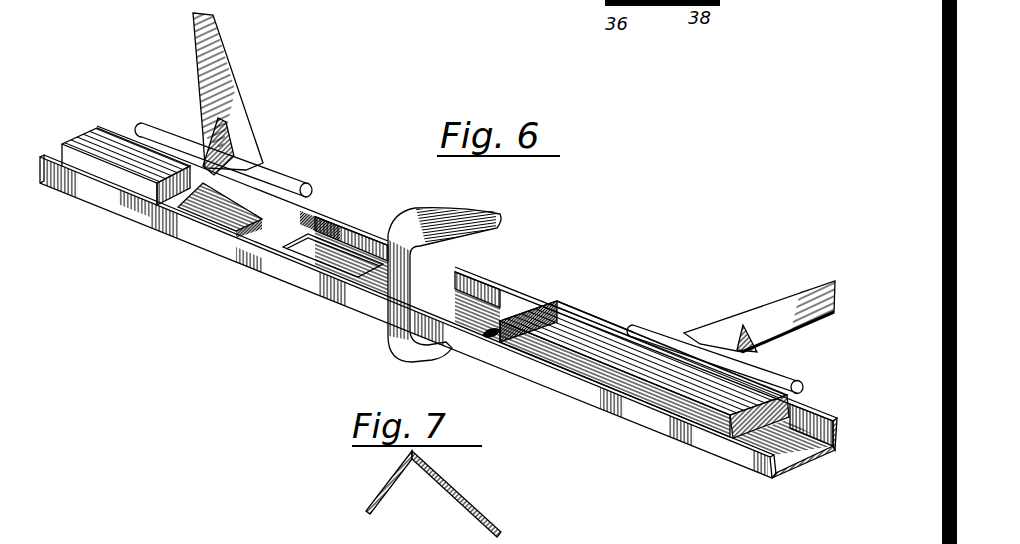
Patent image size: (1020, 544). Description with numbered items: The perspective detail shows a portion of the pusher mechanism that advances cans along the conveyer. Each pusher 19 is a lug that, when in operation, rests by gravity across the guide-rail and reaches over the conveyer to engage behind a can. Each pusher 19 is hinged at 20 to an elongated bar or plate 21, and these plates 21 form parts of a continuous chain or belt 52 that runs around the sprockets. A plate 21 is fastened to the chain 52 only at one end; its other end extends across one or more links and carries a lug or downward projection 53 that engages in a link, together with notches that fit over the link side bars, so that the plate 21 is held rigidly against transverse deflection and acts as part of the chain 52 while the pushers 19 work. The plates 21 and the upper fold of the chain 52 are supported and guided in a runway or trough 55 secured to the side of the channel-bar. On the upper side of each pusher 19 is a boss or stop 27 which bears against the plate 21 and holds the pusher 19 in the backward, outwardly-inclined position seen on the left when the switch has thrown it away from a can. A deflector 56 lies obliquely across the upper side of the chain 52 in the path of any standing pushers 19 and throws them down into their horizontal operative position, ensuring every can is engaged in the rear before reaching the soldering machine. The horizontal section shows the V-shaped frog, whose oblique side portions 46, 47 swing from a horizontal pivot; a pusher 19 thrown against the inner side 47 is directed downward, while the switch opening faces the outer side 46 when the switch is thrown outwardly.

In FIG. 6, the pusher 19 is at (230, 50).
In FIG. 6, the hinge 20 is at (288, 178).
In FIG. 6, the bar or plate 21 is at (100, 134).
In FIG. 6, the boss or stop 27 is at (745, 326).
In FIG. 6, the chain or belt 52 is at (333, 246).
In FIG. 6, the lug or downward projection 53 is at (486, 334).
In FIG. 6, the runway or trough 55 is at (172, 217).
In FIG. 6, the deflector 56 is at (439, 216).
In FIG. 7, the outer oblique side of frog 46 is at (373, 507).
In FIG. 7, the inner oblique side of frog 47 is at (481, 517).